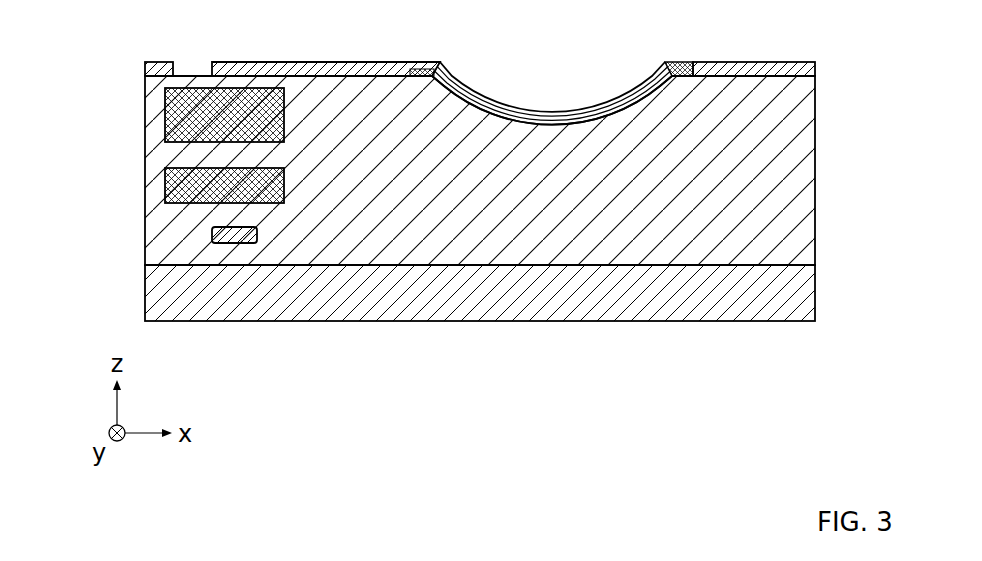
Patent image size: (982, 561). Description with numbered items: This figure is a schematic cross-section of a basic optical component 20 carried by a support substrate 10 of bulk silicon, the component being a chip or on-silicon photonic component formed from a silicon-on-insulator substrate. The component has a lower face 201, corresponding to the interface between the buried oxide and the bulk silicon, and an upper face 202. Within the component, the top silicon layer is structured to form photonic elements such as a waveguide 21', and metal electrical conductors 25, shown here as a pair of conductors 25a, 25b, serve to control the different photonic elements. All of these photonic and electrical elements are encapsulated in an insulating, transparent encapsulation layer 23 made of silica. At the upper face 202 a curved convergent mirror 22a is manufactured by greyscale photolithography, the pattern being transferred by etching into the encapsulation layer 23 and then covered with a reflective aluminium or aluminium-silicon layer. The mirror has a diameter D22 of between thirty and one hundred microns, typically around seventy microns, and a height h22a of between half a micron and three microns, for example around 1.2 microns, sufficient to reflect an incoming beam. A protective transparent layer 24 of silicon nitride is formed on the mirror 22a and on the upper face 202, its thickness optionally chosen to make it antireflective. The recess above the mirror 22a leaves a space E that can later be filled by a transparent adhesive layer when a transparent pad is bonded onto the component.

The substrate 10 is at (178, 321).
The basic optical component 20 is at (826, 62).
The lower face 201 is at (407, 265).
The upper face 202 is at (323, 62).
The waveguide 21' is at (249, 307).
The curved convergent mirror 22a is at (600, 125).
The encapsulation layer 23 is at (683, 172).
The protective transparent layer 24 is at (777, 76).
The metal electrical conductors 25 is at (76, 102).
The metal electrical conductor 25a is at (165, 108).
The metal electrical conductor 25b is at (165, 186).
The space above the convergent mirror E is at (542, 88).
The diameter of the mirror D22 is at (665, 60).
The height of the convergent mirror h22a is at (607, 124).